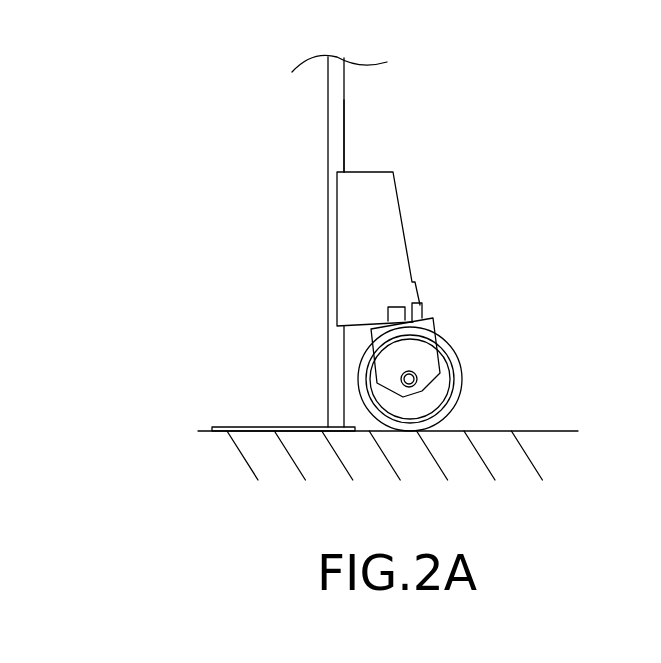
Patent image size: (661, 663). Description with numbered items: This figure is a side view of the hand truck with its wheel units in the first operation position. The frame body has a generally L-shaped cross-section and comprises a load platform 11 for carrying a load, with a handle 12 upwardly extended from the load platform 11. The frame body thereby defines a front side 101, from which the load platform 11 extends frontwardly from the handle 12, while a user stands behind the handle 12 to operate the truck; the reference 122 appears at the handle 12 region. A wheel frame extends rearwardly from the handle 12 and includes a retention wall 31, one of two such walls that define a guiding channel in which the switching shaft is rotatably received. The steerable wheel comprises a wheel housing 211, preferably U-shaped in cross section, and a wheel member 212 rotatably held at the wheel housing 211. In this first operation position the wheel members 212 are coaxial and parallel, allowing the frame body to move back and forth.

The handle 12 is at (337, 108).
The pole lower section 122 is at (410, 138).
The retention wall 31 is at (390, 235).
The wheel housing 211 is at (417, 343).
The wheel member 212 is at (448, 407).
The load platform 11 is at (247, 427).
The front side 101 is at (286, 271).